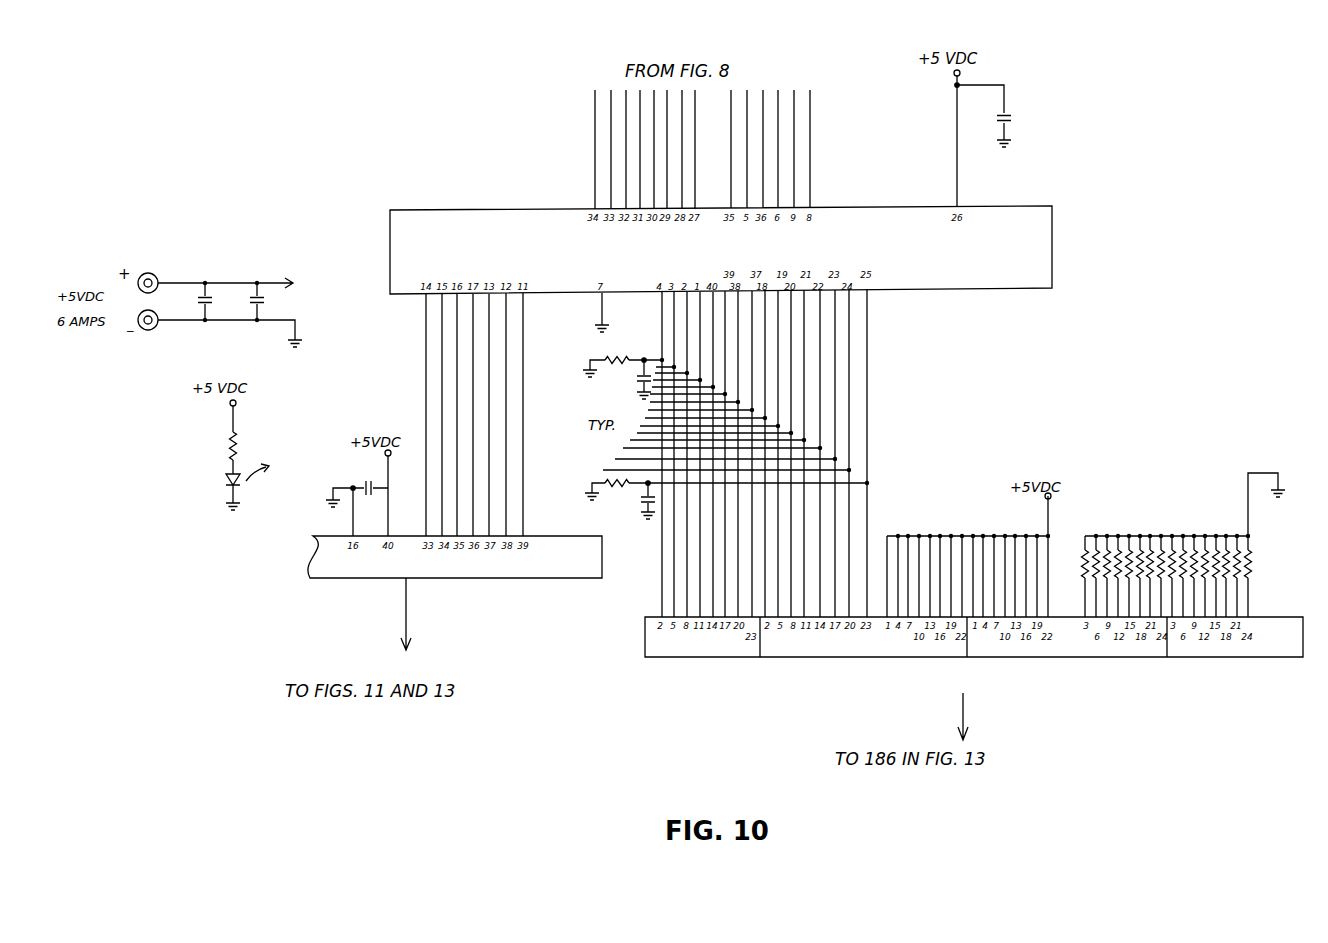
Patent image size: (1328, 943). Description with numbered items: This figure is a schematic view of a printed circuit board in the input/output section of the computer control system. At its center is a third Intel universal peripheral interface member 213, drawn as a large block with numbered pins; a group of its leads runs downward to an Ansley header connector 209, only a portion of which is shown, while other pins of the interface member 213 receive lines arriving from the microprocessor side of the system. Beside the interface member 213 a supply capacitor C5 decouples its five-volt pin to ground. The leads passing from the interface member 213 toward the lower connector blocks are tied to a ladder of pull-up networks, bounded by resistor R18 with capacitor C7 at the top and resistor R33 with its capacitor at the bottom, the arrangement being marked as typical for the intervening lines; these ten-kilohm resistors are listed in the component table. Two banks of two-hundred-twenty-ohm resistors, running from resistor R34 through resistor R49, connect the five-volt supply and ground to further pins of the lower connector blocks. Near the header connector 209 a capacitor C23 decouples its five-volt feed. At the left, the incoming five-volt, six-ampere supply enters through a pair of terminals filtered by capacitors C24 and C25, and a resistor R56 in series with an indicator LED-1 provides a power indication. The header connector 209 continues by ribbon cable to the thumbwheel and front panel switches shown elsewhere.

The Ansley header connector 209 is at (537, 565).
The universal peripheral interface member 213 is at (992, 278).
The capacitor C5 is at (995, 138).
The capacitor C7 is at (631, 378).
The capacitor C23 is at (358, 493).
The capacitor C24 is at (220, 310).
The capacitor C25 is at (270, 301).
The resistor R18 is at (622, 359).
The resistor R33 is at (726, 500).
The resistor R34 is at (984, 555).
The resistor R49 is at (1185, 545).
The resistor R56 is at (250, 437).
The light emitting diode LED-1 is at (216, 477).